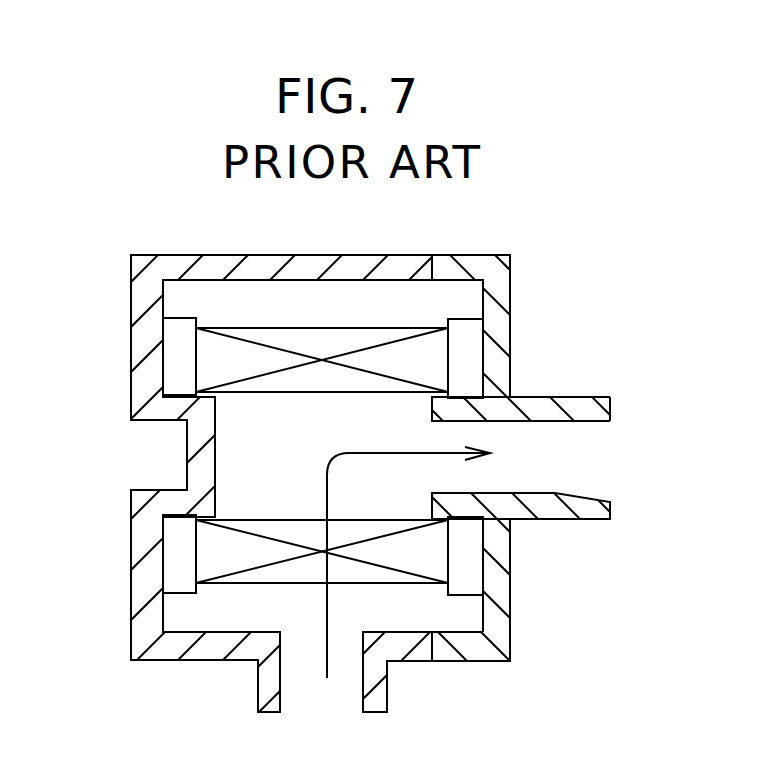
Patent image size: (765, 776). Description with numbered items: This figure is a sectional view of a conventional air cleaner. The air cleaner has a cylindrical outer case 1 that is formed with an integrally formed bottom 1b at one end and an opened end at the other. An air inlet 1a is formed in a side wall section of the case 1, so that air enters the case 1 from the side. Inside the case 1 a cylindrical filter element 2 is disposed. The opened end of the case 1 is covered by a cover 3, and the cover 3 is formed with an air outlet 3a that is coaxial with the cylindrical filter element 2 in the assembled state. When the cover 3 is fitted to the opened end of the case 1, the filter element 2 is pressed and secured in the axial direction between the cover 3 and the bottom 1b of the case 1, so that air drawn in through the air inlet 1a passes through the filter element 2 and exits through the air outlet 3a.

The outer case 1 is at (199, 650).
The air inlet 1a is at (380, 695).
The bottom 1b is at (148, 359).
The filter element 2 is at (347, 337).
The cover 3 is at (532, 402).
The air outlet 3a is at (585, 414).